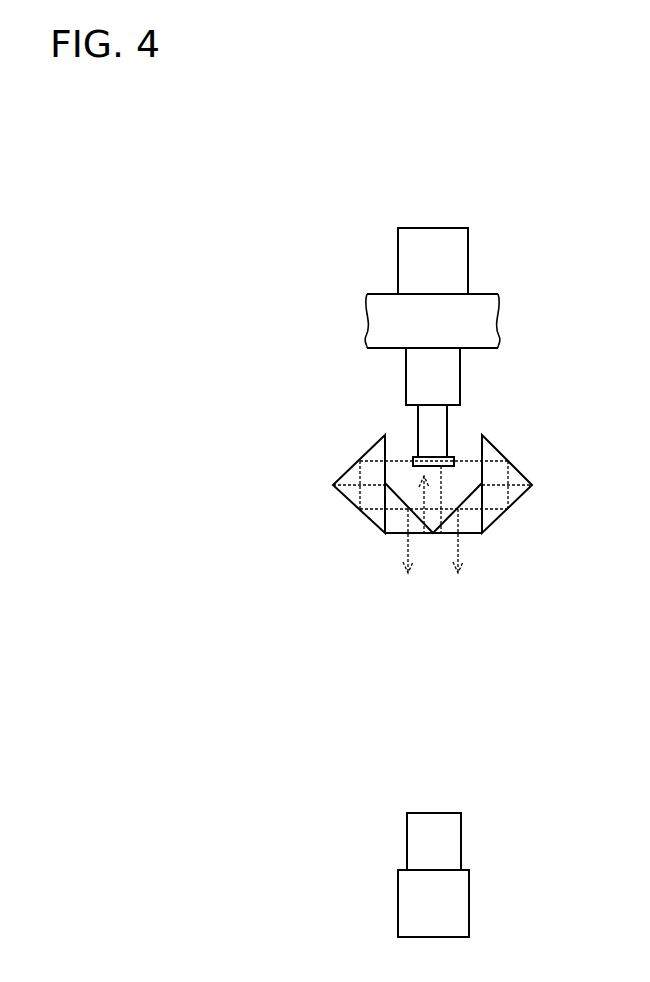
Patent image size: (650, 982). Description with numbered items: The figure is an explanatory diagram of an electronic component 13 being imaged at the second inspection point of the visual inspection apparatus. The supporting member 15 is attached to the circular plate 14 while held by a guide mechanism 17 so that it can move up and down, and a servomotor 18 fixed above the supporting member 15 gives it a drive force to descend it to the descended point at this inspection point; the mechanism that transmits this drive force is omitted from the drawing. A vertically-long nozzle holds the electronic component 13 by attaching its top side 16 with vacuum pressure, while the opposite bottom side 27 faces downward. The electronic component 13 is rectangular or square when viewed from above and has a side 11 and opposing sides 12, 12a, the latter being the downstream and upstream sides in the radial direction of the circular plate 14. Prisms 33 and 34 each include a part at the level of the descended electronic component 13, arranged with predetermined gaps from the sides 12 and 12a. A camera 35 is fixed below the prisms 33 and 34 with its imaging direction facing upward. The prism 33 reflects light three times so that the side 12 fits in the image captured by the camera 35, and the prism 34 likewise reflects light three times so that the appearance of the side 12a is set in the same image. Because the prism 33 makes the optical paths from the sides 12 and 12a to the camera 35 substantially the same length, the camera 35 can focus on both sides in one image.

The servomotor 18 is at (444, 245).
The circular plate 14 is at (470, 315).
The guide mechanism 17 is at (425, 367).
The supporting member 15 is at (437, 418).
The top side 16 is at (418, 452).
The side 11 is at (442, 456).
The side 12 is at (457, 453).
The side 12a is at (414, 457).
The prism 34 is at (357, 497).
The prism 33 is at (497, 495).
The electronic component 13 is at (424, 525).
The bottom side 27 is at (441, 533).
The camera 35 is at (455, 907).